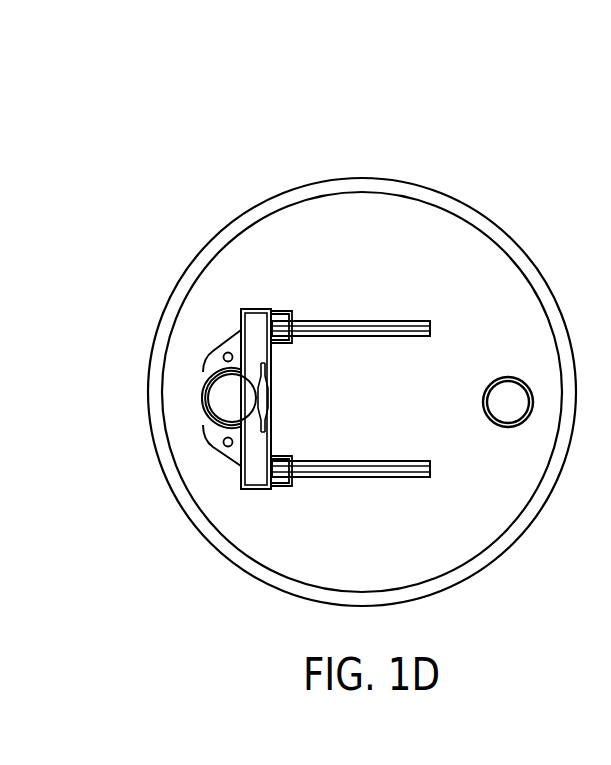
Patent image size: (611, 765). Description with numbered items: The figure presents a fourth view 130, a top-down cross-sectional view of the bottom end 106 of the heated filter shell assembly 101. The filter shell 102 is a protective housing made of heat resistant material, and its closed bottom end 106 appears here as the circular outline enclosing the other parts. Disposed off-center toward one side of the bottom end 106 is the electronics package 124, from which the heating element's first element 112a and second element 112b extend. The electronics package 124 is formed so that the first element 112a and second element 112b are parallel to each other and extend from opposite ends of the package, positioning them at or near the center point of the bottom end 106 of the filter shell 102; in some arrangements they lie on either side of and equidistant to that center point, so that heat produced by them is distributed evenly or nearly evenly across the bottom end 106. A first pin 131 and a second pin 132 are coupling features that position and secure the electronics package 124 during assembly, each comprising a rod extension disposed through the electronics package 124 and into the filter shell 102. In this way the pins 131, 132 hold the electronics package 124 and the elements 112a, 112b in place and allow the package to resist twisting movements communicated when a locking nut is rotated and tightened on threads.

The heated filter shell assembly 101 is at (364, 120).
The fourth view 130 is at (193, 163).
The filter shell 102 is at (293, 192).
The bottom end 106 is at (552, 210).
The electronics package 124 is at (253, 322).
The first pin 131 is at (226, 353).
The second pin 132 is at (224, 444).
The first element 112a is at (400, 327).
The second element 112b is at (413, 470).